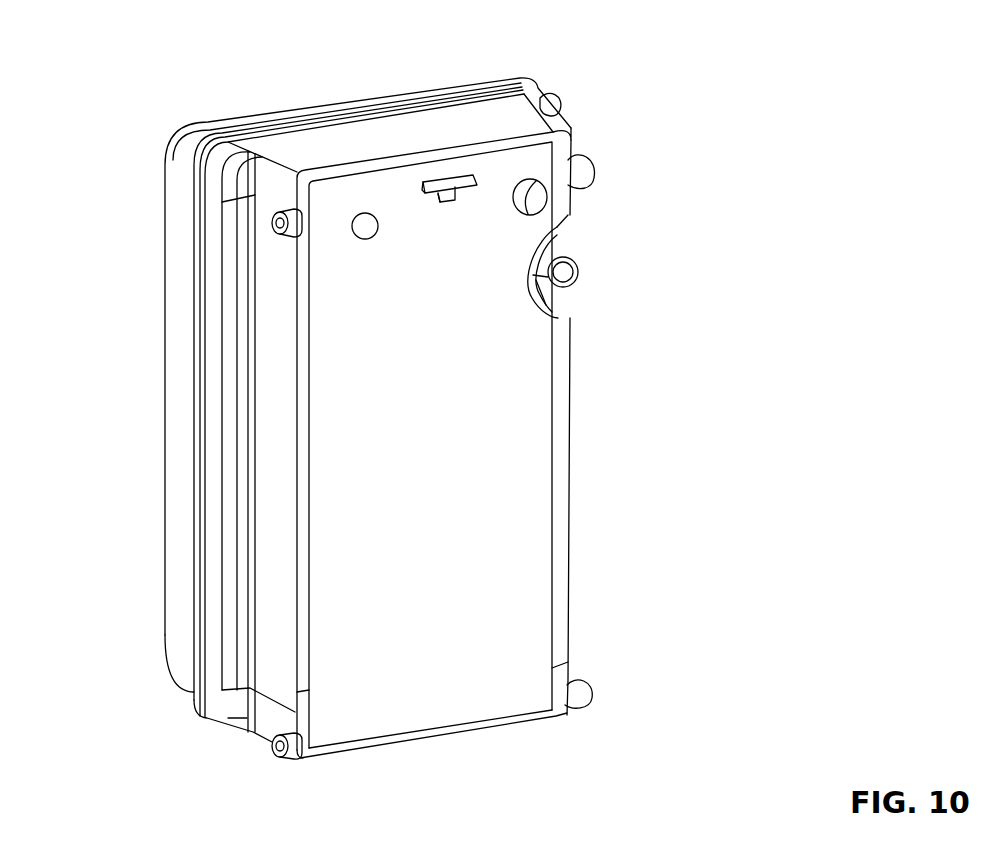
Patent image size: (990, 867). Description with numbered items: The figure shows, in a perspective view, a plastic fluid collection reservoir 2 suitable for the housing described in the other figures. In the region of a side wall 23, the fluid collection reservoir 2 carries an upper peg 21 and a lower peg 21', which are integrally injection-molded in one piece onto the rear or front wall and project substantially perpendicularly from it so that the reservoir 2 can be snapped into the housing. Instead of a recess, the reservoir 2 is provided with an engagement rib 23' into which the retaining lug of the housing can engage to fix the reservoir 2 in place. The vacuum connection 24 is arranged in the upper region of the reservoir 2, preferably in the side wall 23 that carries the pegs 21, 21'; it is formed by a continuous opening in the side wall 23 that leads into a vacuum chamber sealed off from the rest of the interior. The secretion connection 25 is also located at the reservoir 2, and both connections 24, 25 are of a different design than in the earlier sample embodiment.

The fluid collection reservoir 2 is at (140, 379).
The upper peg 21 is at (394, 168).
The lower peg 21' is at (397, 720).
The side wall 23 is at (434, 443).
The engagement rib 23' is at (434, 108).
The vacuum connection 24 is at (363, 225).
The secretion connection 25 is at (567, 268).